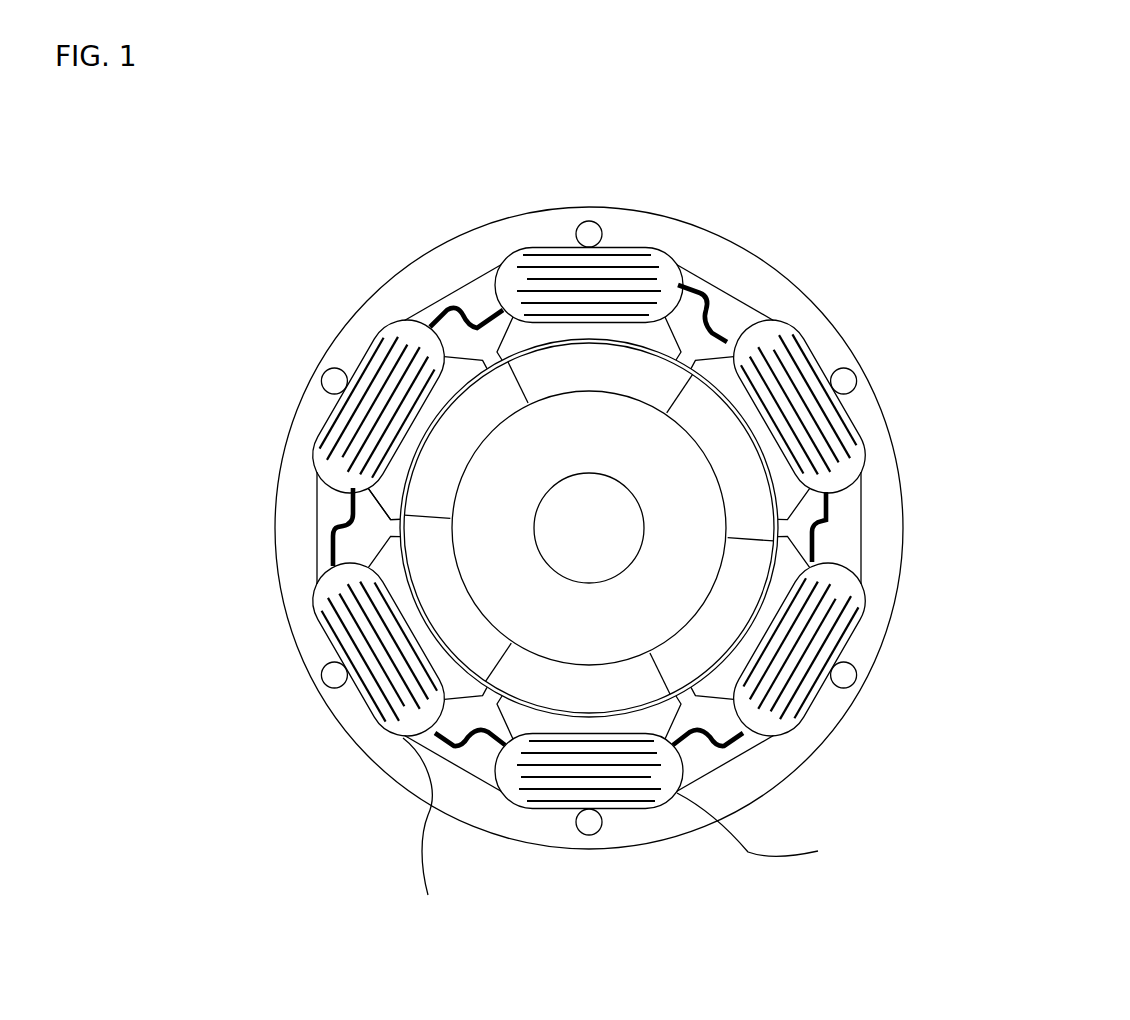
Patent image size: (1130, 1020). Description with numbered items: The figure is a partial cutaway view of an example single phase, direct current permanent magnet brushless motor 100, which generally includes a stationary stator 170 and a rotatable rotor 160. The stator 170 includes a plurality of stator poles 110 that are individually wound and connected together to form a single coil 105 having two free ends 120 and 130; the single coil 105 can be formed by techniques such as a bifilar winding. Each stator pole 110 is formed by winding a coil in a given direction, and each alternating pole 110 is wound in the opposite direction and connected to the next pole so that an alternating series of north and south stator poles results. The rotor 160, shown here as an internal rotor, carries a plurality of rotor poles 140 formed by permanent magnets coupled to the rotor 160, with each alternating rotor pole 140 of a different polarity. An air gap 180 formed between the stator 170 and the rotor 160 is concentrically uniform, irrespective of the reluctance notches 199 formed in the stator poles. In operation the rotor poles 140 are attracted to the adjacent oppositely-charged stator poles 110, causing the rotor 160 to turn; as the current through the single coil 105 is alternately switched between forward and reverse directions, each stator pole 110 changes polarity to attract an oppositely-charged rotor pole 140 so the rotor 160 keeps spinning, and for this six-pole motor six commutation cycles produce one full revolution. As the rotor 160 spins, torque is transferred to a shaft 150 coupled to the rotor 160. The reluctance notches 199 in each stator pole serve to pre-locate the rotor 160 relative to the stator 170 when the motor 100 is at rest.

The motor 100 is at (812, 212).
The single coil 105 is at (400, 841).
The stator pole 110 is at (797, 367).
The free end 120 is at (748, 853).
The free end 130 is at (428, 866).
The rotor pole 140 is at (718, 435).
The shaft 150 is at (575, 503).
The rotor 160 is at (378, 529).
The stator 170 is at (907, 513).
The air gap 180 is at (420, 607).
The reluctance notch 199 is at (393, 510).